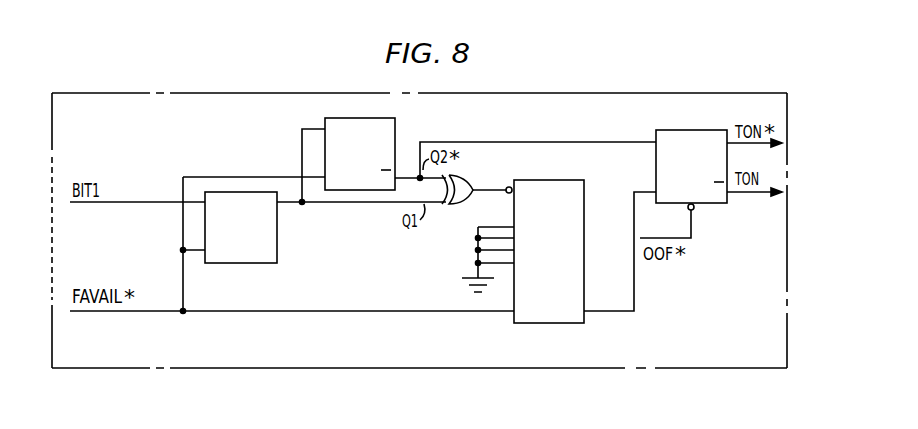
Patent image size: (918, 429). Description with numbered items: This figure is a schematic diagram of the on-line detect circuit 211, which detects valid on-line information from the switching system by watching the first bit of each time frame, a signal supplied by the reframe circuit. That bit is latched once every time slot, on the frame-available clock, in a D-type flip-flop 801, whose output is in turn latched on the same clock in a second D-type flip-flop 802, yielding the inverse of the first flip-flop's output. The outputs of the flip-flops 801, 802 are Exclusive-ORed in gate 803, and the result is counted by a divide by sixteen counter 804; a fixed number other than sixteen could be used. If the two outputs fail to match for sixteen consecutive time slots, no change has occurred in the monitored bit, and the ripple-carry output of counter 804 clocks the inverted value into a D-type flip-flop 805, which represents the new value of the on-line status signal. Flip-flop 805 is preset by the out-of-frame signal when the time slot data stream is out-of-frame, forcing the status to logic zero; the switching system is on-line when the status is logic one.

The on-line detect circuit 211 is at (555, 93).
The D-type flip-flop 801 is at (228, 264).
The D-type flip-flop 802 is at (322, 120).
The Exclusive-OR gate 803 is at (473, 182).
The divide by 16 counter 804 is at (546, 324).
The D-type flip-flop 805 is at (684, 130).